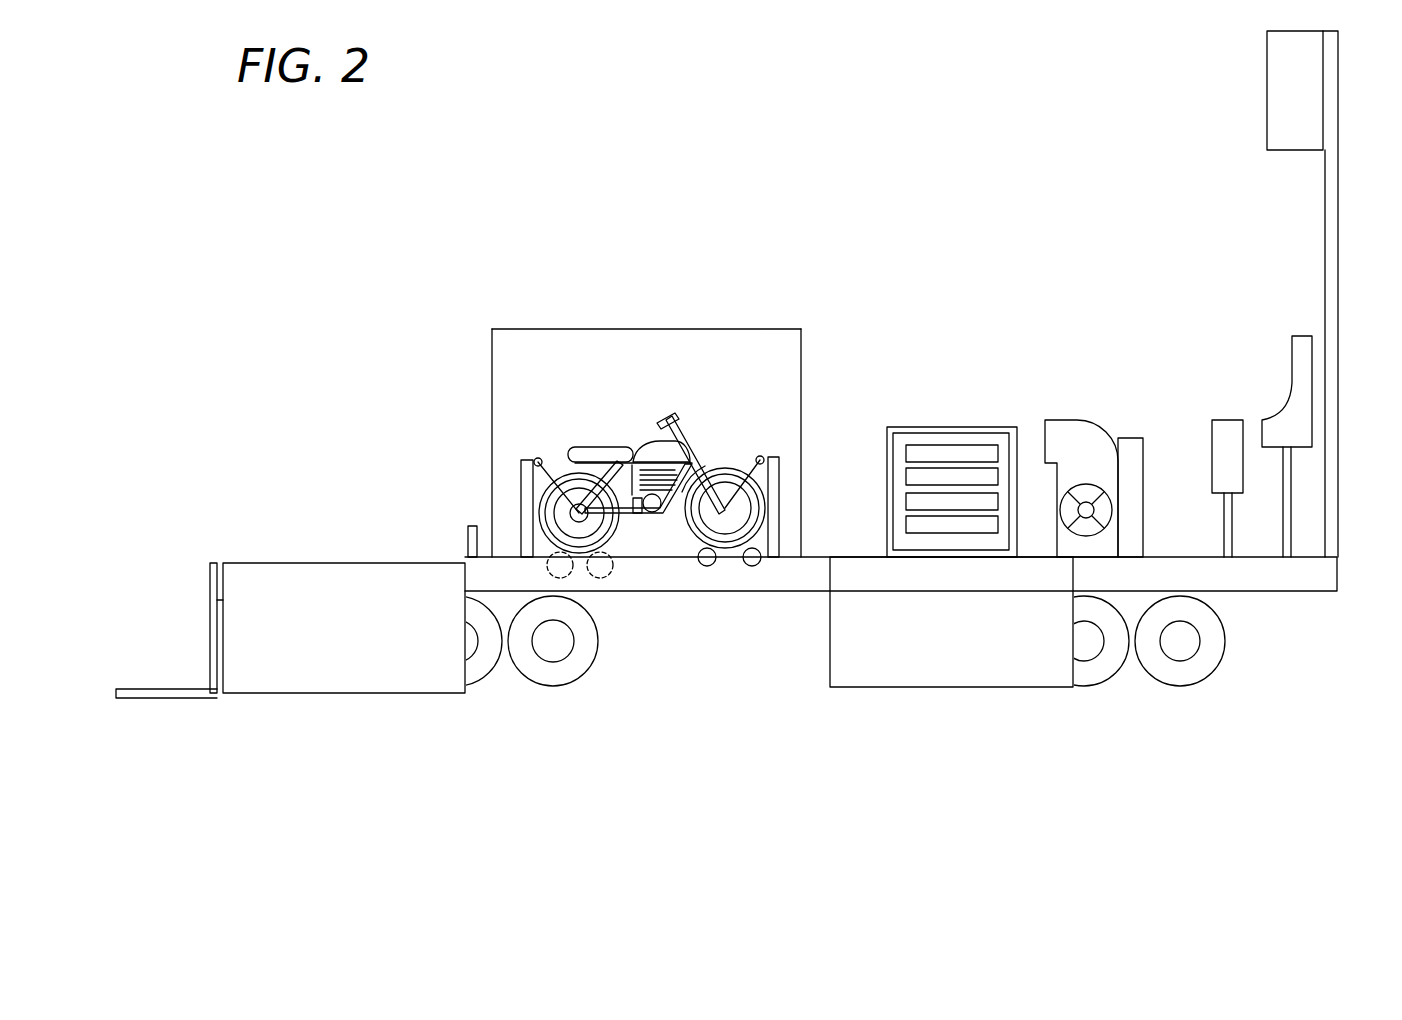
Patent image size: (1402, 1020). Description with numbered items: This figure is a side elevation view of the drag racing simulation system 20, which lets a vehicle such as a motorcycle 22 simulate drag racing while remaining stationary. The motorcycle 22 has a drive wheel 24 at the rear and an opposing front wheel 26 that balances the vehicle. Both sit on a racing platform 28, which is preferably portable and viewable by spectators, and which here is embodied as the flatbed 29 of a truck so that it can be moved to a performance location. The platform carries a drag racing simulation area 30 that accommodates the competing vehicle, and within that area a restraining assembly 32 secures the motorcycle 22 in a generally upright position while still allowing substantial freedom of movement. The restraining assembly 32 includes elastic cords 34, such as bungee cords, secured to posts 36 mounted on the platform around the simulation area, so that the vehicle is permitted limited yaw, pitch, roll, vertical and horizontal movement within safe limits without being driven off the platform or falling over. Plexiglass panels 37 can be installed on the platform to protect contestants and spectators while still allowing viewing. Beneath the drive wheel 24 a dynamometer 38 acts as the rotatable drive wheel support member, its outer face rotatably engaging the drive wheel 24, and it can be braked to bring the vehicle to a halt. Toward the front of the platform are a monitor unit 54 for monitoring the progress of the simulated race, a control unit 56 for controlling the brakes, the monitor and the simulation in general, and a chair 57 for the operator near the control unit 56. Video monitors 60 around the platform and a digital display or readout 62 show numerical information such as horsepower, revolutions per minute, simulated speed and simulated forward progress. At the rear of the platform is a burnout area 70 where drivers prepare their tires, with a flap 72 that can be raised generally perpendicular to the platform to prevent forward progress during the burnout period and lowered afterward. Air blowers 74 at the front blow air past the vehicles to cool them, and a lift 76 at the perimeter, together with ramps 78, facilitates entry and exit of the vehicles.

The drag racing simulation system 20 is at (419, 256).
The motorcycle 22 is at (596, 438).
The drive wheel 24 is at (620, 533).
The front wheel 26 is at (764, 535).
The racing platform 28 is at (1345, 570).
The flatbed 29 is at (1273, 592).
The drag racing simulation area 30 is at (812, 372).
The restraining assembly 32 is at (508, 472).
The elastic cords 34 is at (538, 458).
The posts 36 is at (521, 505).
The plexiglass panels 37 is at (753, 329).
The dynamometer 38 is at (577, 575).
The monitor unit 54 is at (1125, 437).
The control unit 56 is at (1230, 420).
The chair 57 is at (1285, 337).
The video monitors 60 is at (1017, 445).
The digital display or readout 62 is at (943, 447).
The burnout area 70 is at (272, 545).
The flaps 72 is at (468, 537).
The air blowers 74 is at (1070, 417).
The lifts 76 is at (162, 662).
The ramps 78 is at (380, 695).